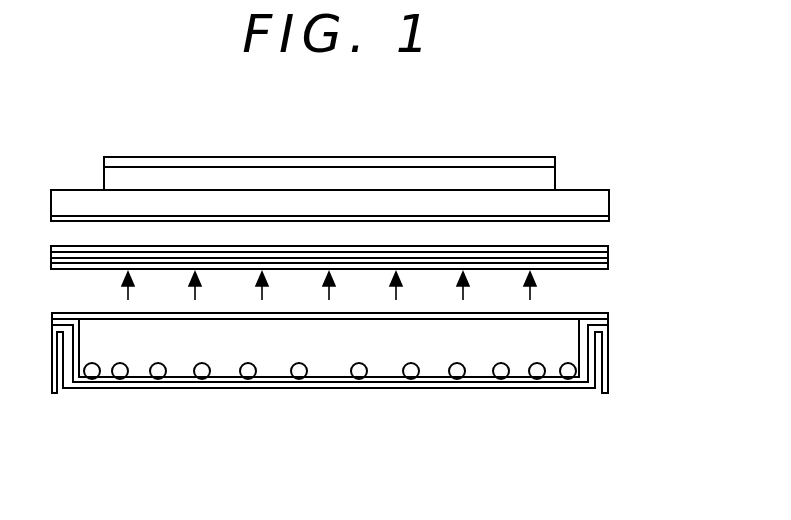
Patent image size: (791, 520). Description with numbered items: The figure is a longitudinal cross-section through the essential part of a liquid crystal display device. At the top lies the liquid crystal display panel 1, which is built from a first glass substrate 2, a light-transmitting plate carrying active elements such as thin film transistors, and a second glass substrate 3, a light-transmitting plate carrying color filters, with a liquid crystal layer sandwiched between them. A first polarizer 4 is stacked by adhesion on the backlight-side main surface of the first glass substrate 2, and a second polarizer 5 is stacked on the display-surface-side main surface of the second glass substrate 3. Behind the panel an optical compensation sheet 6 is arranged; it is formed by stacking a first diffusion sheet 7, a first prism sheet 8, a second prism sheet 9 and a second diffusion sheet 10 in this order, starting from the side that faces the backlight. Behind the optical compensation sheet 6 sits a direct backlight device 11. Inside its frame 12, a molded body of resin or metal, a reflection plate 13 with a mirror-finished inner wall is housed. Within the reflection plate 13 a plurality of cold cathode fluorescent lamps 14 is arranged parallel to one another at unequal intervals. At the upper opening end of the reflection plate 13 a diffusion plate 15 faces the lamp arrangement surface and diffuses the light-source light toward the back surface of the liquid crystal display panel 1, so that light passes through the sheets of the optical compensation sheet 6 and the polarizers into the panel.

The liquid crystal display panel 1 is at (332, 154).
The first glass substrate 2 is at (55, 210).
The second glass substrate 3 is at (104, 180).
The first polarizer 4 is at (609, 215).
The second polarizer 5 is at (556, 158).
The optical compensation sheet 6 is at (386, 257).
The first diffusion sheet 7 is at (358, 287).
The first prism sheet 8 is at (608, 262).
The second prism sheet 9 is at (608, 252).
The second diffusion sheet 10 is at (608, 246).
The direct backlight device 11 is at (372, 393).
The frame 12 is at (610, 378).
The reflection plate 13 is at (537, 380).
The cold cathode fluorescent lamps 14 is at (158, 379).
The diffusion plate 15 is at (610, 316).